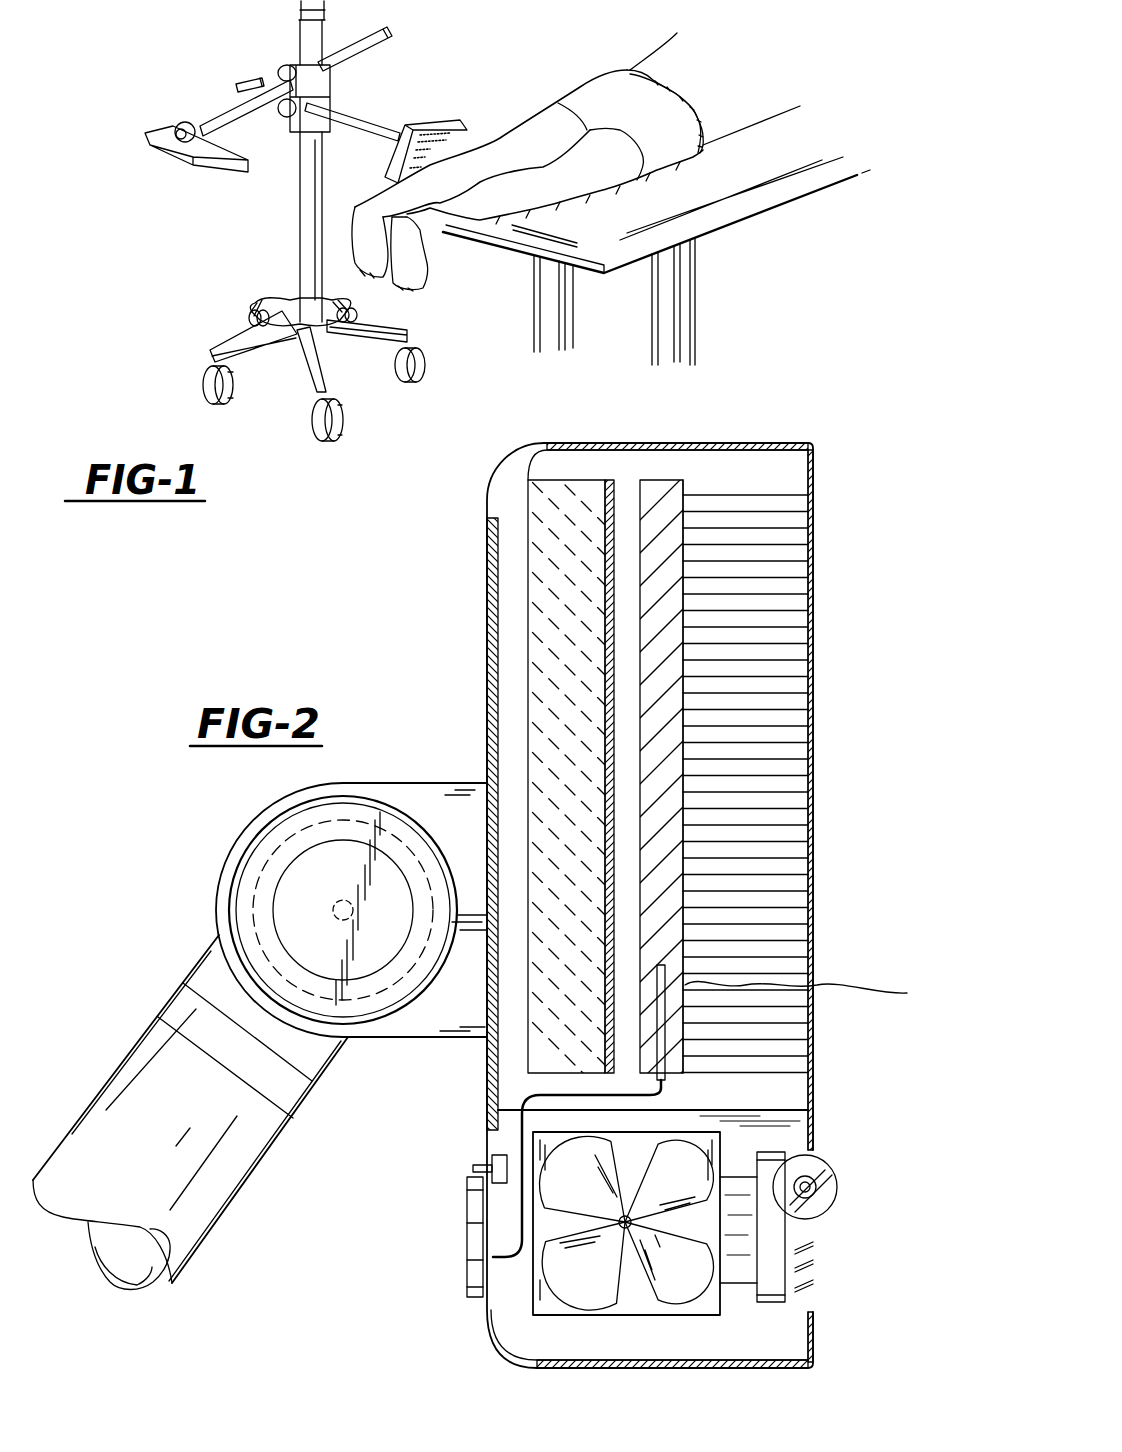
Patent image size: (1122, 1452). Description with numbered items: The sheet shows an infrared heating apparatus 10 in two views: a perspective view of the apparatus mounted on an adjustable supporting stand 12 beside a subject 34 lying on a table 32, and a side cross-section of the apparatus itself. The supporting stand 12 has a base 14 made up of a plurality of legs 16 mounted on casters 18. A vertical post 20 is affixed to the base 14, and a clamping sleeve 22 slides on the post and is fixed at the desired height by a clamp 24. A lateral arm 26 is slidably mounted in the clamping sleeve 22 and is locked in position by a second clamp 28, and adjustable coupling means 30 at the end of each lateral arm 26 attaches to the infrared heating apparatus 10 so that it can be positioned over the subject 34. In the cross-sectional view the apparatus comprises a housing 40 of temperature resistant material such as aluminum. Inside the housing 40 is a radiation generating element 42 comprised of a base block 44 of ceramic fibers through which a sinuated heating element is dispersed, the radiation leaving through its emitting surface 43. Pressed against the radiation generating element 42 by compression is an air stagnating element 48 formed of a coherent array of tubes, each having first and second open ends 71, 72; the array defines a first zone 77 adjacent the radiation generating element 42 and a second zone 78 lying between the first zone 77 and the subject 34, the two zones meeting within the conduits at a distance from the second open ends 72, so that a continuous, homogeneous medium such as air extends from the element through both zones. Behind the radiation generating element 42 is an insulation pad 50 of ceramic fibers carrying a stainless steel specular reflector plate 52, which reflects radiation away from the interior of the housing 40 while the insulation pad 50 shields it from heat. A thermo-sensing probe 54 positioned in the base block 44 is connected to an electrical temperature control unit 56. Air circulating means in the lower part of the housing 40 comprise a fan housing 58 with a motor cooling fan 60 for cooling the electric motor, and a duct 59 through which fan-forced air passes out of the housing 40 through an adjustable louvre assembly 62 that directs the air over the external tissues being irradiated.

In FIG. 1, the infrared heating apparatus 10 is at (155, 124).
In FIG. 1, the supporting stand 12 is at (296, 215).
In FIG. 1, the base 14 is at (210, 315).
In FIG. 1, the legs 16 is at (318, 360).
In FIG. 1, the casters 18 is at (205, 383).
In FIG. 1, the vertical post 20 is at (306, 270).
In FIG. 1, the clamping sleeve 22 is at (314, 143).
In FIG. 1, the clamp 24 is at (337, 84).
In FIG. 1, the lateral arm 26 is at (227, 110).
In FIG. 2, the lateral arm 26 is at (150, 1038).
In FIG. 1, the clamp 28 is at (279, 120).
In FIG. 1, the adjustable coupling means 30 is at (178, 120).
In FIG. 2, the adjustable coupling means 30 is at (240, 883).
In FIG. 1, the table 32 is at (730, 223).
In FIG. 1, the subject 34 is at (530, 130).
In FIG. 2, the housing 40 is at (484, 548).
In FIG. 2, the radiation generating element 42 is at (668, 466).
In FIG. 2, the emitting surface 43 is at (683, 652).
In FIG. 2, the base block 44 is at (678, 507).
In FIG. 2, the air stagnating element 48 is at (772, 528).
In FIG. 2, the insulation pad 50 is at (536, 515).
In FIG. 2, the specular reflector plate 52 is at (623, 486).
In FIG. 2, the thermo-sensing probe 54 is at (664, 1033).
In FIG. 2, the electrical temperature control unit 56 is at (465, 1232).
In FIG. 2, the fan housing 58 is at (546, 1147).
In FIG. 2, the duct 59 is at (743, 1273).
In FIG. 2, the motor cooling fan 60 is at (570, 1280).
In FIG. 2, the adjustable louvre assembly 62 is at (829, 1201).
In FIG. 2, the first open ends 71 is at (683, 751).
In FIG. 2, the second open ends 72 is at (810, 817).
In FIG. 2, the first zone 77 is at (727, 983).
In FIG. 2, the second zone 78 is at (817, 984).